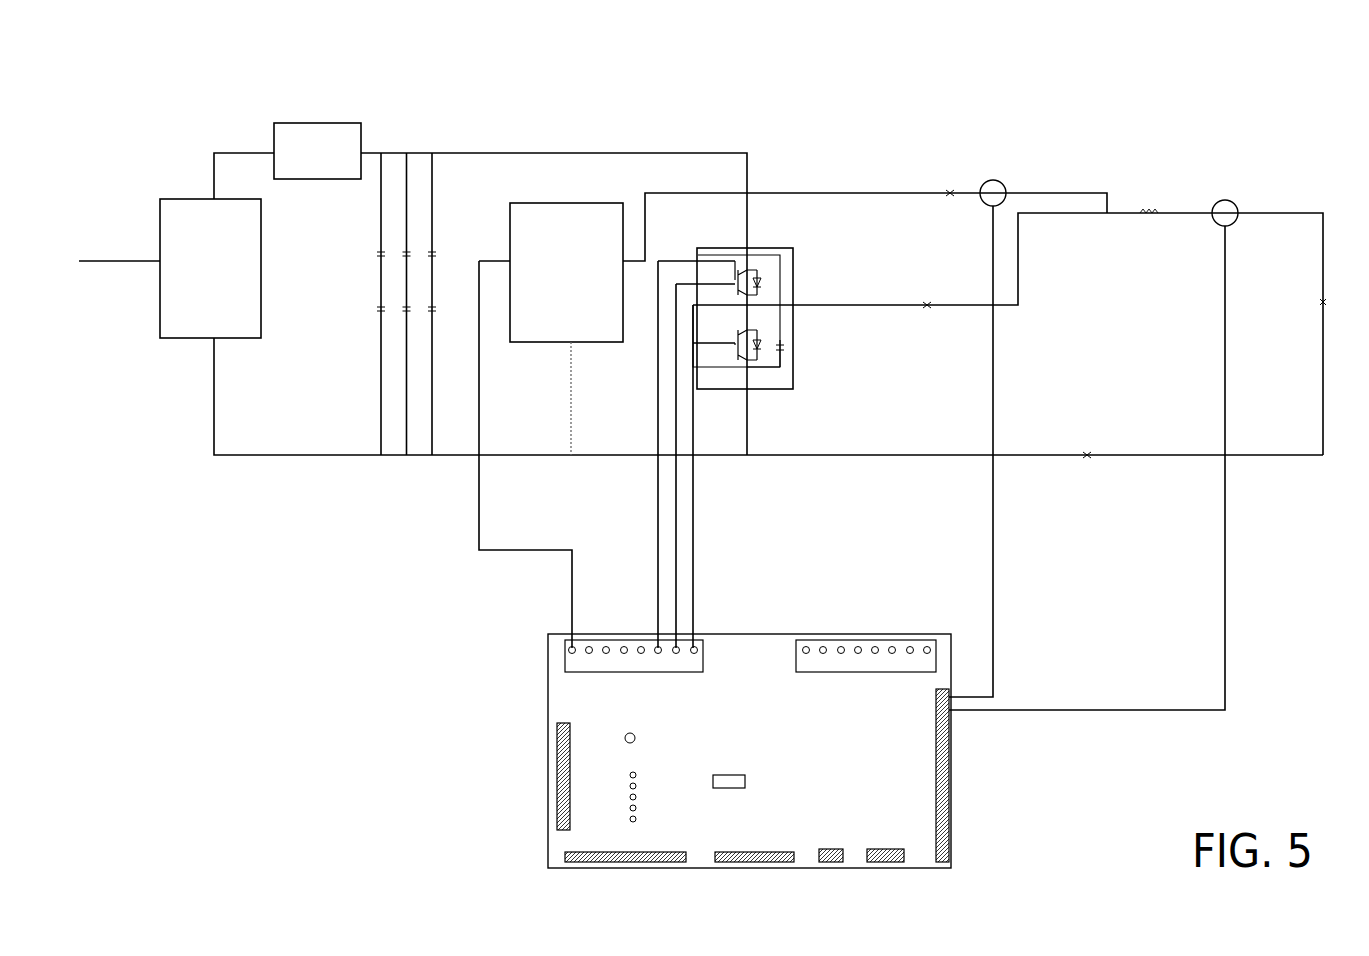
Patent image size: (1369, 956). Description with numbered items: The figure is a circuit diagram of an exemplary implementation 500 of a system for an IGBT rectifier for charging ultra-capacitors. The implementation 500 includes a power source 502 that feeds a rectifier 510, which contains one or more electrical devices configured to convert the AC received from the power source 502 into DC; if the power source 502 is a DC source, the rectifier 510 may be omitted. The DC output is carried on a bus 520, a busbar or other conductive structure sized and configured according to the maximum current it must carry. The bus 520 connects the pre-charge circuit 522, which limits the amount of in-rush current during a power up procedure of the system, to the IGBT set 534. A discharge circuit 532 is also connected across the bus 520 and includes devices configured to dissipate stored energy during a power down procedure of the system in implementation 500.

The implementation 500 is at (1173, 49).
The power source 502 is at (82, 240).
The rectifier 510 is at (126, 289).
The bus 520 is at (479, 136).
The pre-charge circuit 522 is at (298, 106).
The discharge circuit 532 is at (592, 186).
The IGBT set 534 is at (813, 350).